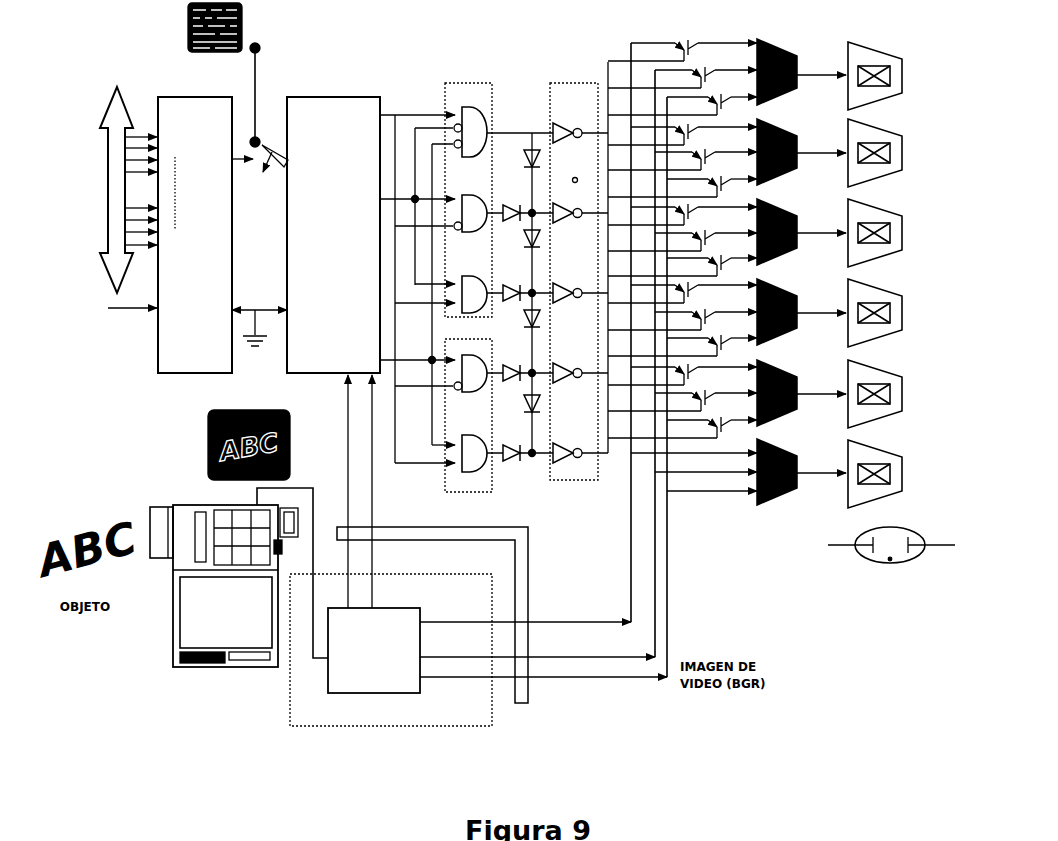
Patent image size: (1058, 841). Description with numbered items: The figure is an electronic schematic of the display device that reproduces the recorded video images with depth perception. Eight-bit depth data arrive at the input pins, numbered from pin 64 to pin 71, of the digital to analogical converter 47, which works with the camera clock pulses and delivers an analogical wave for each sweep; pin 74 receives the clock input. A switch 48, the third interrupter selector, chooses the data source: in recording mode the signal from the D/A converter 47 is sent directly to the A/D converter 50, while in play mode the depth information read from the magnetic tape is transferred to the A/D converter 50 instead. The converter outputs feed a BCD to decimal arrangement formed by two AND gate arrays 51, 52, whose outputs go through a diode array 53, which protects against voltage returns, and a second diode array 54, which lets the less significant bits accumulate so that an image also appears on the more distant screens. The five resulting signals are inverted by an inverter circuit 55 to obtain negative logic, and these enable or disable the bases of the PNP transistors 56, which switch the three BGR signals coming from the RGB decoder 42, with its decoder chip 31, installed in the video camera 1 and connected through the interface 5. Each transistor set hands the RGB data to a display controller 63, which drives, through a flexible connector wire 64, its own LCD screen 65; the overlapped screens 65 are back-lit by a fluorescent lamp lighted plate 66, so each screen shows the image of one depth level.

The video camera 1 is at (224, 616).
The interface 5 is at (531, 699).
The RGB decoder 31 is at (390, 642).
The RGB decoder circuit 42 is at (391, 660).
The digital to analogical converter 47 is at (153, 224).
The switch 48 is at (268, 125).
The A/D converter 50 is at (333, 224).
The first logic gate group 51 is at (468, 191).
The second logic gate group 52 is at (479, 426).
The diode array 53 is at (517, 470).
The second diode array 54 is at (527, 128).
The inverter circuit 55 is at (574, 272).
The PNP transistor 56 is at (682, 250).
The display controller 63 is at (801, 257).
The flexible connector wire 64 is at (155, 154).
The LCD screen 65 is at (875, 258).
The fluorescent lamp lighted plate 66 is at (891, 561).
The input gate pin 71 is at (155, 230).
The clock input 74 is at (129, 309).